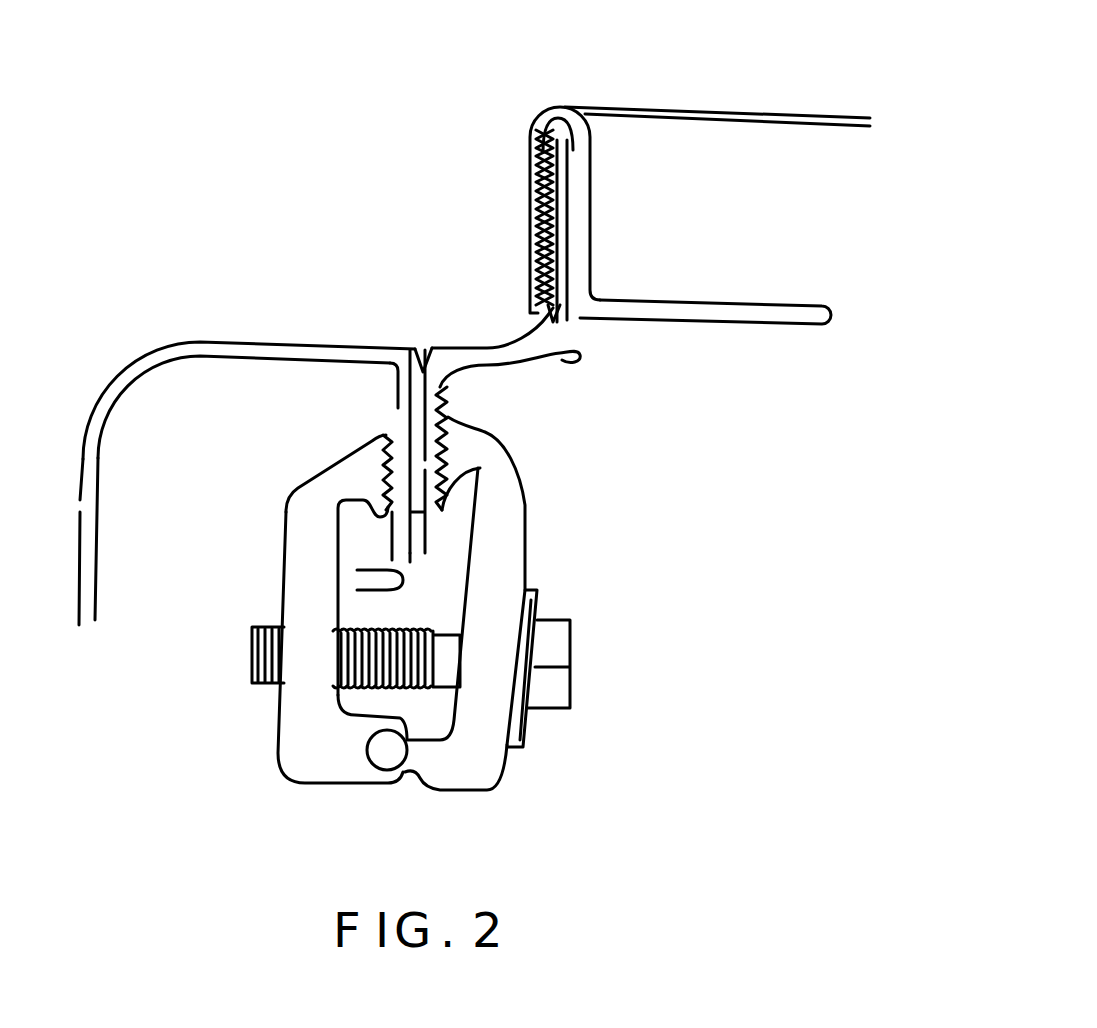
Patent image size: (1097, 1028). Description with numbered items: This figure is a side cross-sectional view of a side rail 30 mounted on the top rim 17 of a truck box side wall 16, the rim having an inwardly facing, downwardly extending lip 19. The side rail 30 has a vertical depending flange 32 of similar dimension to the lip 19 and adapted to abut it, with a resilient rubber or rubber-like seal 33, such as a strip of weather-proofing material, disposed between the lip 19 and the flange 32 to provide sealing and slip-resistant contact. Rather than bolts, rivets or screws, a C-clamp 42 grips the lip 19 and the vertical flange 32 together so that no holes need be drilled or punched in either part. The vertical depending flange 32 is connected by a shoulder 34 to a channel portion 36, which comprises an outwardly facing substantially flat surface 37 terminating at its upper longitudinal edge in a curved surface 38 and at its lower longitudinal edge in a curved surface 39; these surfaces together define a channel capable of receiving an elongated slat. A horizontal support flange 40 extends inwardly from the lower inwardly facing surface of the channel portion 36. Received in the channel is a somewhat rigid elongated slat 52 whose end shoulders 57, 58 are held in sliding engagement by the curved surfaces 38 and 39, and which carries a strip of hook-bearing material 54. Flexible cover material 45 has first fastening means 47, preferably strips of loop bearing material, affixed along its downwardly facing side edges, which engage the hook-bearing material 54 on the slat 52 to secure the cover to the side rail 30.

The side wall 16 is at (88, 532).
The top rim 17 is at (215, 345).
The downwardly extending lip 19 is at (403, 412).
The side rail 30 is at (575, 390).
The vertical depending flange 32 is at (450, 410).
The seal 33 is at (425, 346).
The shoulder 34 is at (497, 338).
The channel portion 36 is at (638, 220).
The outwardly facing substantially flat surface 37 is at (577, 190).
The curved surface 38 is at (567, 112).
The curved surface 39 is at (565, 362).
The horizontal support flange 40 is at (798, 308).
The C-clamp 42 is at (500, 818).
The flexible cover material 45 is at (722, 108).
The first fastening means 47 is at (535, 243).
The elongated slat 52 is at (560, 262).
The hook-bearing material 54 is at (530, 196).
The end shoulder 57 is at (549, 107).
The end shoulder 58 is at (578, 318).